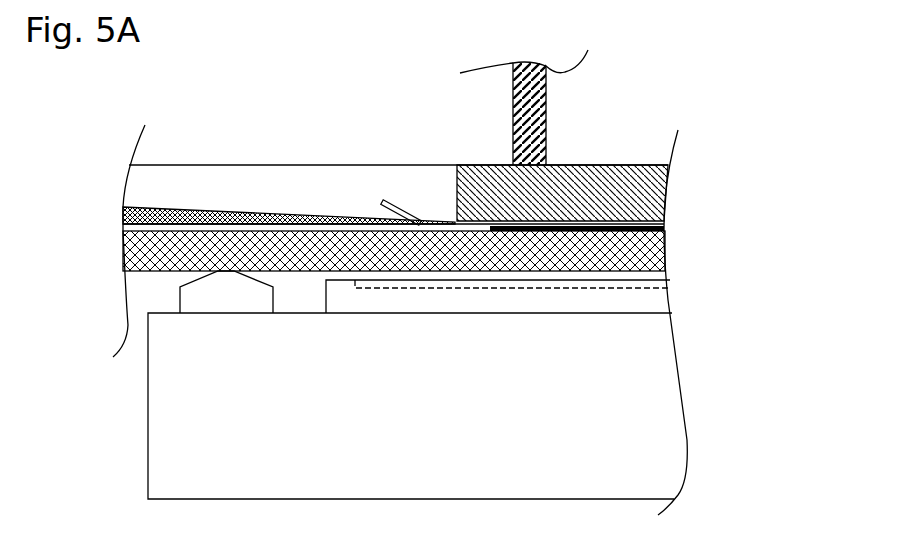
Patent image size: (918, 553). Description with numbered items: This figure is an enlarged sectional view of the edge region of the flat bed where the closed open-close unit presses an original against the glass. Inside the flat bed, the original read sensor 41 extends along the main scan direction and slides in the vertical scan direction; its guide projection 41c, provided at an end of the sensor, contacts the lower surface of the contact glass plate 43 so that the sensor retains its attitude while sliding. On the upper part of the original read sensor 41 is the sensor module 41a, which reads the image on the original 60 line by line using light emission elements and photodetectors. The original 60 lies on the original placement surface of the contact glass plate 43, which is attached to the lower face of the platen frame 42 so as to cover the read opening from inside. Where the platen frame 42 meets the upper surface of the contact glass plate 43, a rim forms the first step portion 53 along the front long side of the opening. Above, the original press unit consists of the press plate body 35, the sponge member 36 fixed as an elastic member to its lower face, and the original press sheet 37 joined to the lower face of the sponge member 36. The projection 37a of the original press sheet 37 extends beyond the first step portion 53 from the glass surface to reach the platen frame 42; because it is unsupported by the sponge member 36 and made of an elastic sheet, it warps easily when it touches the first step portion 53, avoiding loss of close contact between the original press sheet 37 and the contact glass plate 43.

The press plate body 35 is at (546, 108).
The sponge member 36 is at (647, 193).
The original press sheet 37 is at (663, 222).
The projection 37a is at (388, 202).
The original read sensor 41 is at (167, 393).
The sensor module 41a is at (665, 303).
The guide projection 41c is at (193, 302).
The platen frame 42 is at (188, 207).
The contact glass plate 43 is at (143, 253).
The first step portion 53 is at (428, 220).
The original 60 is at (664, 230).